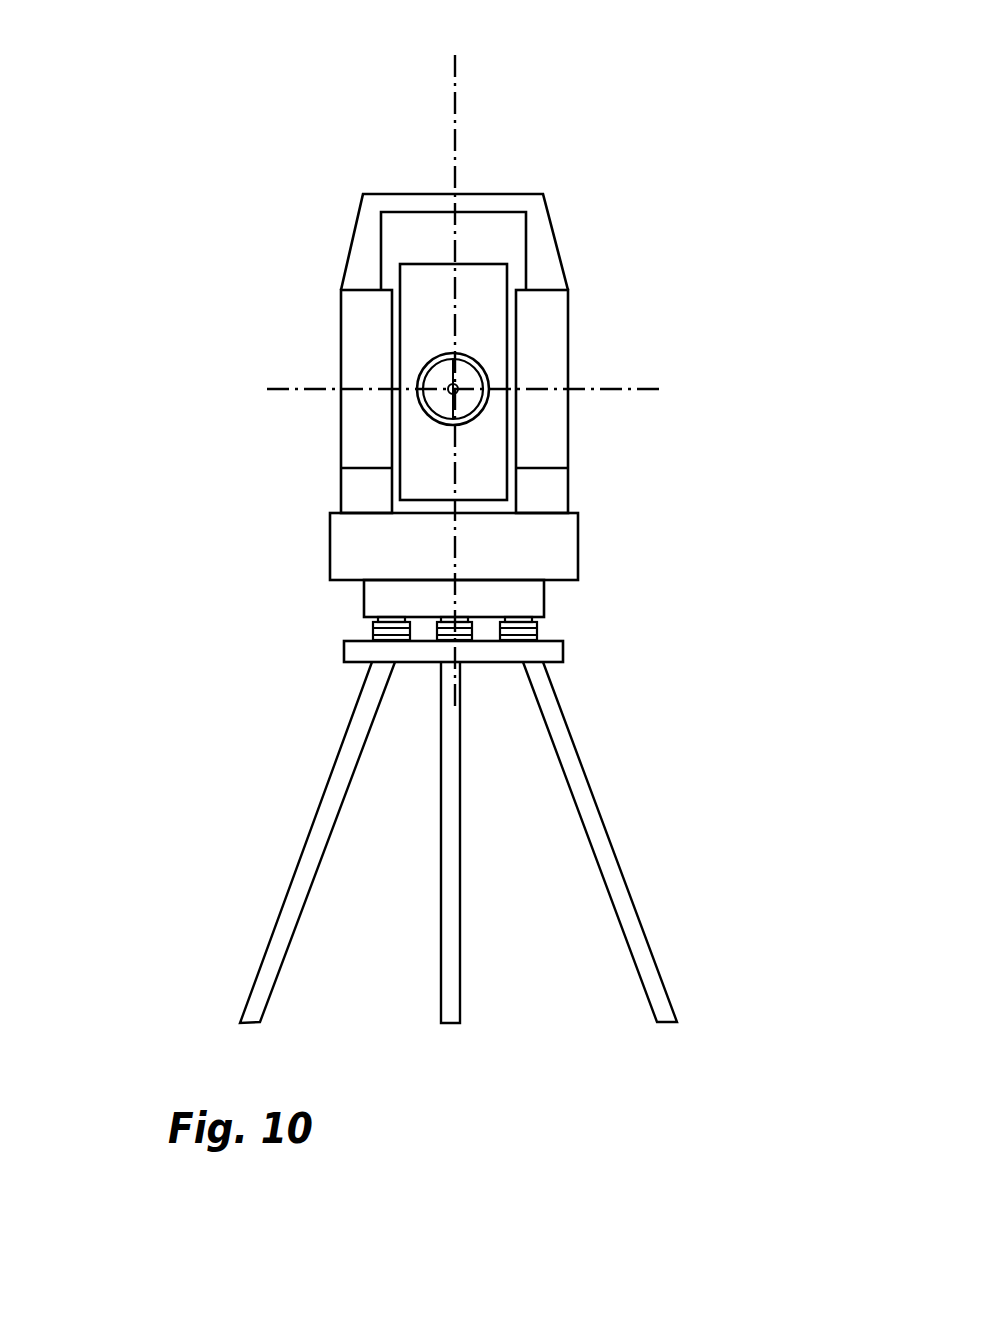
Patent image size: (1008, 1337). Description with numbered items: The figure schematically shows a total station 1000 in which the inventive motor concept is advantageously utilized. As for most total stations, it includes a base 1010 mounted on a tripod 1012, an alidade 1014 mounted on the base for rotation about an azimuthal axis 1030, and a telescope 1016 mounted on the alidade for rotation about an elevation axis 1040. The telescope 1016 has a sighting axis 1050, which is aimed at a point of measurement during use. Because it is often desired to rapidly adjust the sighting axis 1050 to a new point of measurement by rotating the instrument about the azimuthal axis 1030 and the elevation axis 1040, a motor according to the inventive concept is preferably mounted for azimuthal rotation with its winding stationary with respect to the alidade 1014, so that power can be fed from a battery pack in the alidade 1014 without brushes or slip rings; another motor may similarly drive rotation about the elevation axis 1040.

The total station 1000 is at (272, 230).
The base 1010 is at (512, 600).
The tripod 1012 is at (572, 770).
The alidade 1014 is at (548, 545).
The telescope 1016 is at (488, 297).
The azimuthal axis 1030 is at (455, 100).
The elevation axis 1040 is at (633, 388).
The sighting axis 1050 is at (448, 390).